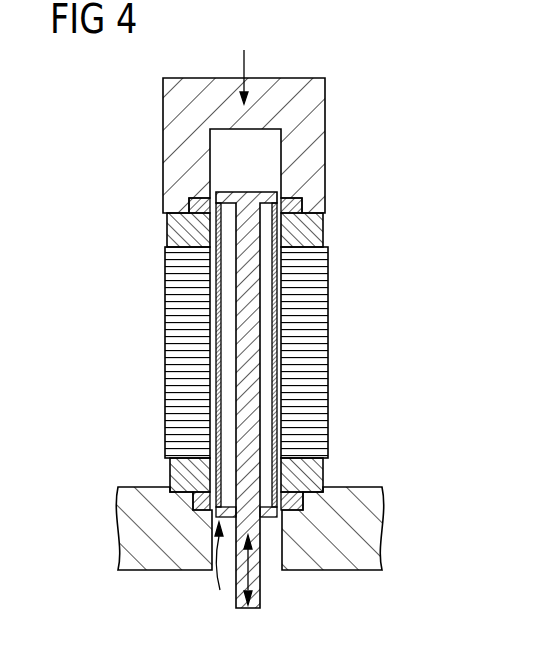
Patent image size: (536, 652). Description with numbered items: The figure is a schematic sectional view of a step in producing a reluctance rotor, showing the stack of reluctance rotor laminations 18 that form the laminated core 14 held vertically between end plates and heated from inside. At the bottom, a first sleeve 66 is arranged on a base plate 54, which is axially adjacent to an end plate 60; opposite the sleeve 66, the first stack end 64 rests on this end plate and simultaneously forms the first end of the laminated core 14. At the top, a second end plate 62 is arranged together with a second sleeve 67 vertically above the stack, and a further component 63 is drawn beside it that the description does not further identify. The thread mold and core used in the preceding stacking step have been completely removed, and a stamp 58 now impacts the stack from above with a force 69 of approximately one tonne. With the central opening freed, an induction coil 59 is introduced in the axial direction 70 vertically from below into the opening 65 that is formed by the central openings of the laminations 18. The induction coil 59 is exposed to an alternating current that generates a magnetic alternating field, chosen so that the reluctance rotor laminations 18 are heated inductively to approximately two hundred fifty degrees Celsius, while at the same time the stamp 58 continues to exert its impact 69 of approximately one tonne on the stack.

The laminated core 14 is at (242, 355).
The reluctance rotor laminations 18 is at (326, 248).
The base plate 54 is at (123, 543).
The stamp 58 is at (193, 87).
The induction coil 59 is at (276, 517).
The end plate 60 is at (310, 473).
The second end plate 62 is at (323, 230).
The upper left ring 63 is at (170, 228).
The first stack end 64 is at (173, 473).
The opening 65 is at (220, 576).
The first sleeve 66 is at (193, 500).
The second sleeve 67 is at (302, 205).
The force 69 is at (247, 62).
The axial direction 70 is at (260, 574).